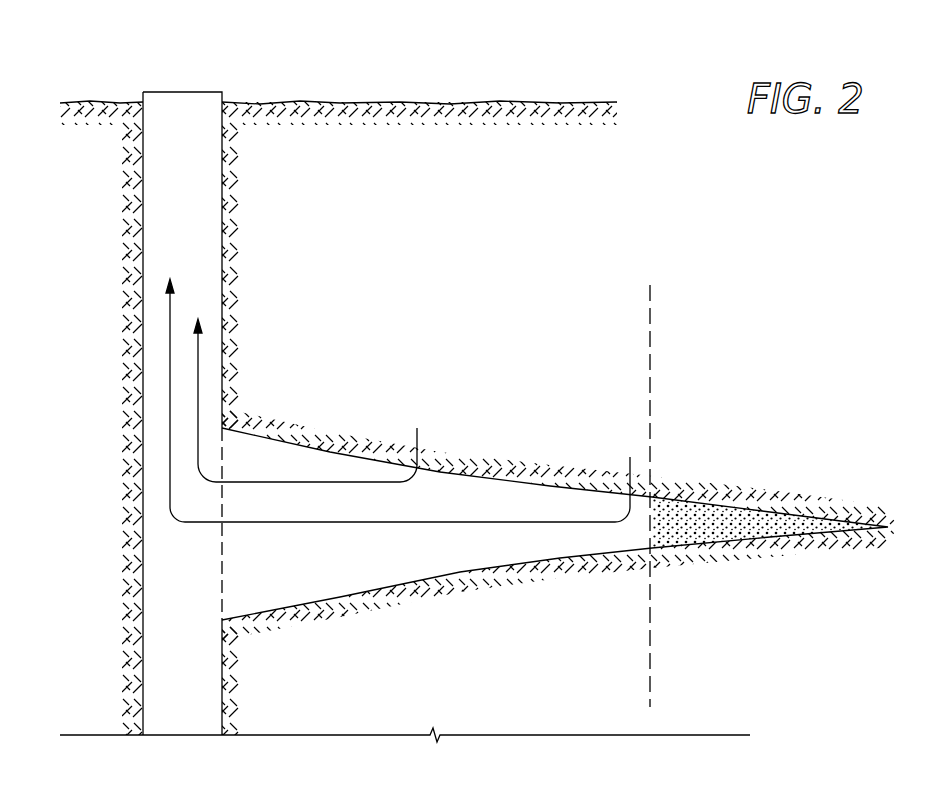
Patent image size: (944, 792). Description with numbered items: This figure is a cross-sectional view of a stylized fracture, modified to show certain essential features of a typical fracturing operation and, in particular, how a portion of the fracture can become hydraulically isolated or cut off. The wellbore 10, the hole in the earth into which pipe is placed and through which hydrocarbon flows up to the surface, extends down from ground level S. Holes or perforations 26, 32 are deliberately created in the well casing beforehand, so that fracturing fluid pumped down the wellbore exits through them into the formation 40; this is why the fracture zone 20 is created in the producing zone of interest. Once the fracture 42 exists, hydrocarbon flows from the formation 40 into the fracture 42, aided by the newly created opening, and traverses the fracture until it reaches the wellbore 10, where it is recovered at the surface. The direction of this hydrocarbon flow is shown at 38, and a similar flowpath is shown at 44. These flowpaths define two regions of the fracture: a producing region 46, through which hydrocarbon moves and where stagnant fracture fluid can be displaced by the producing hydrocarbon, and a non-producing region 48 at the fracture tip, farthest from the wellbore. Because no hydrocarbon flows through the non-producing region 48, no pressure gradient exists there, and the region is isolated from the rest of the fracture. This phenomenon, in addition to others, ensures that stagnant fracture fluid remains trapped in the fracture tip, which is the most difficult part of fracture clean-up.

The ground level S is at (468, 102).
The wellbore 10 is at (143, 182).
The fracture zone 20 is at (528, 480).
The perforation 26 is at (215, 485).
The perforation 32 is at (218, 559).
The direction of hydrocarbon flow 38 is at (318, 480).
The formation 40 is at (385, 297).
The fracture 42 is at (478, 505).
The flowpath 44 is at (584, 522).
The producing region 46 is at (650, 643).
The non-producing region 48 is at (650, 687).